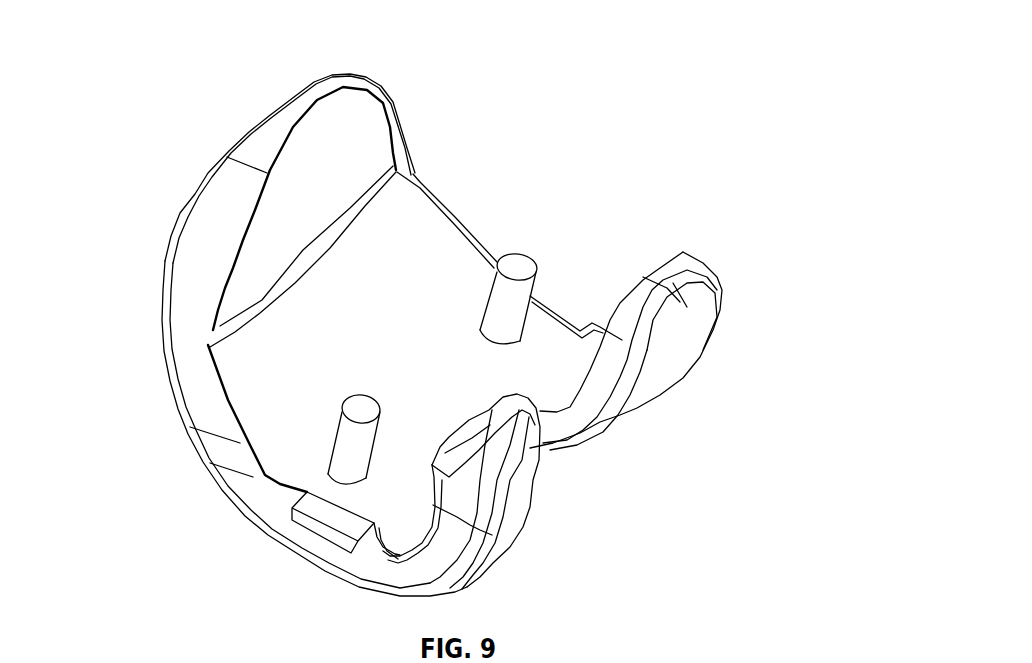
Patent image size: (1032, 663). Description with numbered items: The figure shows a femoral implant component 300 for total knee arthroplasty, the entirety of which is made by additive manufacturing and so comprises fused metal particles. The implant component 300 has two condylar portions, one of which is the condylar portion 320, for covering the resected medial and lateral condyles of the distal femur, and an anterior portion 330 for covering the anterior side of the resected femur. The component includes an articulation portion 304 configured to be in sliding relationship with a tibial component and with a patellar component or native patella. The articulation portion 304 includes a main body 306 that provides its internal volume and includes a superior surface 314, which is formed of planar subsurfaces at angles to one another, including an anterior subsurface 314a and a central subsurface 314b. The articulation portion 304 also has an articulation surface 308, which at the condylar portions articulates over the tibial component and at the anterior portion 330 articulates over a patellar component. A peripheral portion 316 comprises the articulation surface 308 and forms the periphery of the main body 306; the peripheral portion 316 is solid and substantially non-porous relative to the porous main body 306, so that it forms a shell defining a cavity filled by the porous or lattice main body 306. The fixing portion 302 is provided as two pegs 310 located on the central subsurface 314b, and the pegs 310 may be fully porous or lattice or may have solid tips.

The femoral implant component 300 is at (185, 105).
The fixing portion 302 is at (566, 253).
The articulation portion 304 is at (133, 397).
The main body 306 is at (400, 332).
The articulation surface 308 is at (668, 374).
The pegs 310 is at (520, 267).
The superior surface 314 is at (397, 370).
The anterior subsurface 314a is at (323, 187).
The central subsurface 314b is at (440, 350).
The peripheral portion 316 is at (262, 479).
The condylar portion 320 is at (558, 503).
The anterior portion 330 is at (177, 154).